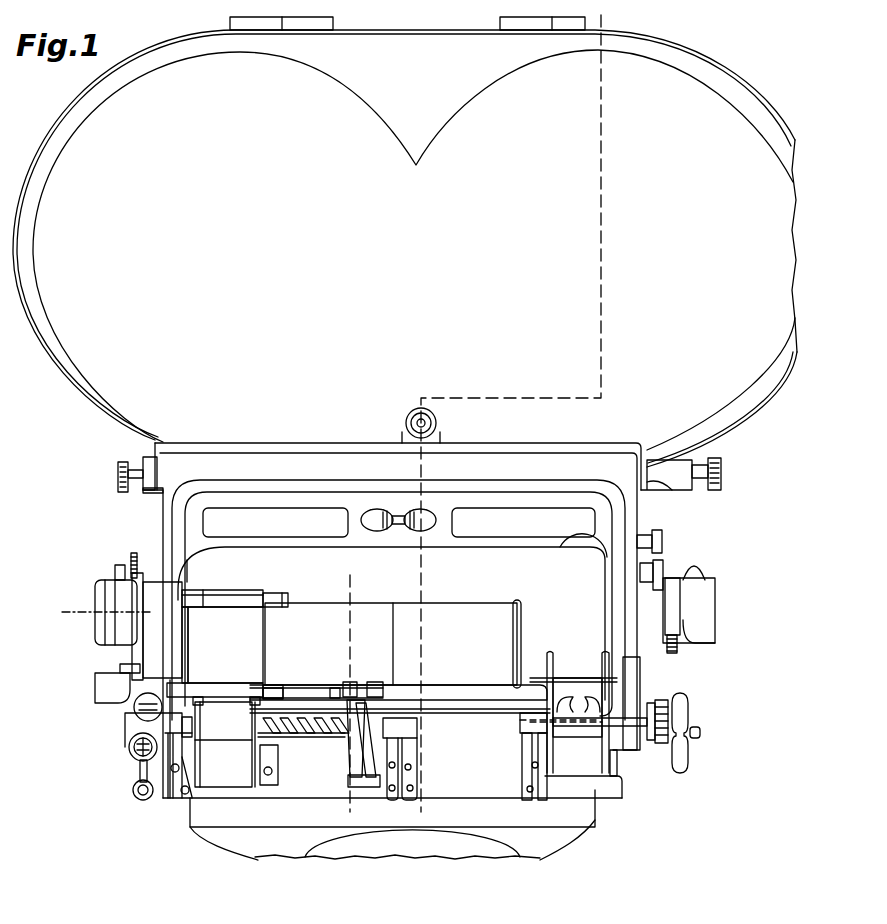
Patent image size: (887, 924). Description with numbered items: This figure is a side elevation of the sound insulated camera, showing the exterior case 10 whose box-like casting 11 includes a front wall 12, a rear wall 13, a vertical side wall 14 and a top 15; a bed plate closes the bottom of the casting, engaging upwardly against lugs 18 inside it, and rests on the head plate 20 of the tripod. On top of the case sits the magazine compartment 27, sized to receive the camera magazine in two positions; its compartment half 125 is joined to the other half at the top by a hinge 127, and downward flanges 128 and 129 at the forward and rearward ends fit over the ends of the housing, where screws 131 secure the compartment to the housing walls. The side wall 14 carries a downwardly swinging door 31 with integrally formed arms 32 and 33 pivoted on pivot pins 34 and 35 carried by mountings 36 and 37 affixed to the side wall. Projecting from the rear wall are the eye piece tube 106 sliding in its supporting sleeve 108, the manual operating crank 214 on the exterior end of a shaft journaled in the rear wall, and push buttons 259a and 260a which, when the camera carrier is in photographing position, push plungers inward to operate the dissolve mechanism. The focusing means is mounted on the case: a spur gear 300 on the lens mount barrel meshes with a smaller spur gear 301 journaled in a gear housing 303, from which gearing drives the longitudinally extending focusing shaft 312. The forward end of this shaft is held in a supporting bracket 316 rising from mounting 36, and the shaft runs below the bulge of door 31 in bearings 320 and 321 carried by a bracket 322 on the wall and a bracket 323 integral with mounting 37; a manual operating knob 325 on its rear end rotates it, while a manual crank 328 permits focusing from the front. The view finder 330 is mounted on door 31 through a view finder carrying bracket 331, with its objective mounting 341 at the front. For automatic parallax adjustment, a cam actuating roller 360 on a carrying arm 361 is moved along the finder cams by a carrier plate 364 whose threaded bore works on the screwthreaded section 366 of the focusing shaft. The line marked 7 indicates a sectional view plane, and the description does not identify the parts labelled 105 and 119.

The section line 7- 7 is at (611, 22).
The exterior case 10 is at (152, 514).
The box-like casting 11 is at (168, 520).
The front wall 12 is at (166, 540).
The rear wall 13 is at (645, 508).
The vertical side wall 14 is at (522, 466).
The top 15 is at (573, 456).
The lugs 18 is at (340, 579).
The head plate 20 is at (503, 820).
The magazine compartment 27 is at (735, 72).
The door 31 is at (277, 493).
The arm 32 is at (225, 762).
The arm 33 is at (583, 756).
The pivot pin 34 is at (282, 796).
The pivot pin 35 is at (620, 787).
The mounting 36 is at (170, 802).
The mounting 37 is at (576, 782).
The lever housing 105 is at (725, 612).
The tube 106 is at (688, 640).
The supporting sleeve 108 is at (665, 645).
The handle 119 is at (689, 761).
The compartment half 125 is at (116, 121).
The hinge 127 is at (333, 24).
The downward flange 128 is at (145, 490).
The downward flange 129 is at (693, 492).
The screws 131 is at (118, 473).
The manual operating crank 214 is at (706, 569).
The push button 259a is at (660, 572).
The push button 260a is at (663, 539).
The spur gear 300 is at (131, 566).
The spur gear 301 is at (120, 669).
The gear housing 303 is at (123, 713).
The focusing shaft 312 is at (298, 740).
The supporting bracket 316 is at (152, 766).
The bearing 320 is at (418, 712).
The bearing 321 is at (526, 728).
The bracket 322 is at (417, 801).
The bracket 323 is at (526, 762).
The manual operating knob 325 is at (663, 718).
The manual crank 328 is at (133, 794).
The view finder 330 is at (401, 603).
The view finder carrying bracket 331 is at (188, 571).
The view finder objective mounting 341 is at (95, 612).
The cam actuating member 360 is at (388, 674).
The carrying arm 361 is at (356, 753).
The carrier plate 364 is at (362, 760).
The screwthreaded section 366 is at (312, 772).